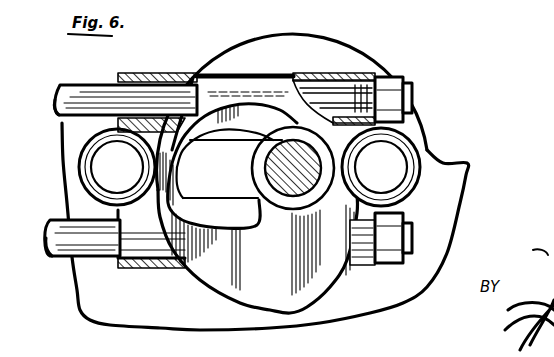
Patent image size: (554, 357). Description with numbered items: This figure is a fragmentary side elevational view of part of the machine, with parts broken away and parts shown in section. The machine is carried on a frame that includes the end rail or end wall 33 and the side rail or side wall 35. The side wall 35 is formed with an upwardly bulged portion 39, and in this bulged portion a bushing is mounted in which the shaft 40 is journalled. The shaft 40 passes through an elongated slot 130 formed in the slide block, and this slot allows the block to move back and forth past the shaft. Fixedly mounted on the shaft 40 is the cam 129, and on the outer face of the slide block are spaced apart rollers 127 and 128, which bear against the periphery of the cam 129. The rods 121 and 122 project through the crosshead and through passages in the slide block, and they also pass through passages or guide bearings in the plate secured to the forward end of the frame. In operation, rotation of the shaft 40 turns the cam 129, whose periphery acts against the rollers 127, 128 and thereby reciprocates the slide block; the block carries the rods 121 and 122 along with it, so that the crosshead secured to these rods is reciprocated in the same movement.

The end rail 33 is at (423, 0).
The side rail 35 is at (462, 196).
The upwardly bulged portion 39 is at (350, 17).
The shaft 40 is at (297, 172).
The rod 121 is at (152, 97).
The rod 122 is at (97, 247).
The roller 127 is at (403, 157).
The roller 128 is at (110, 143).
The cam 129 is at (210, 265).
The elongated slot 130 is at (224, 194).